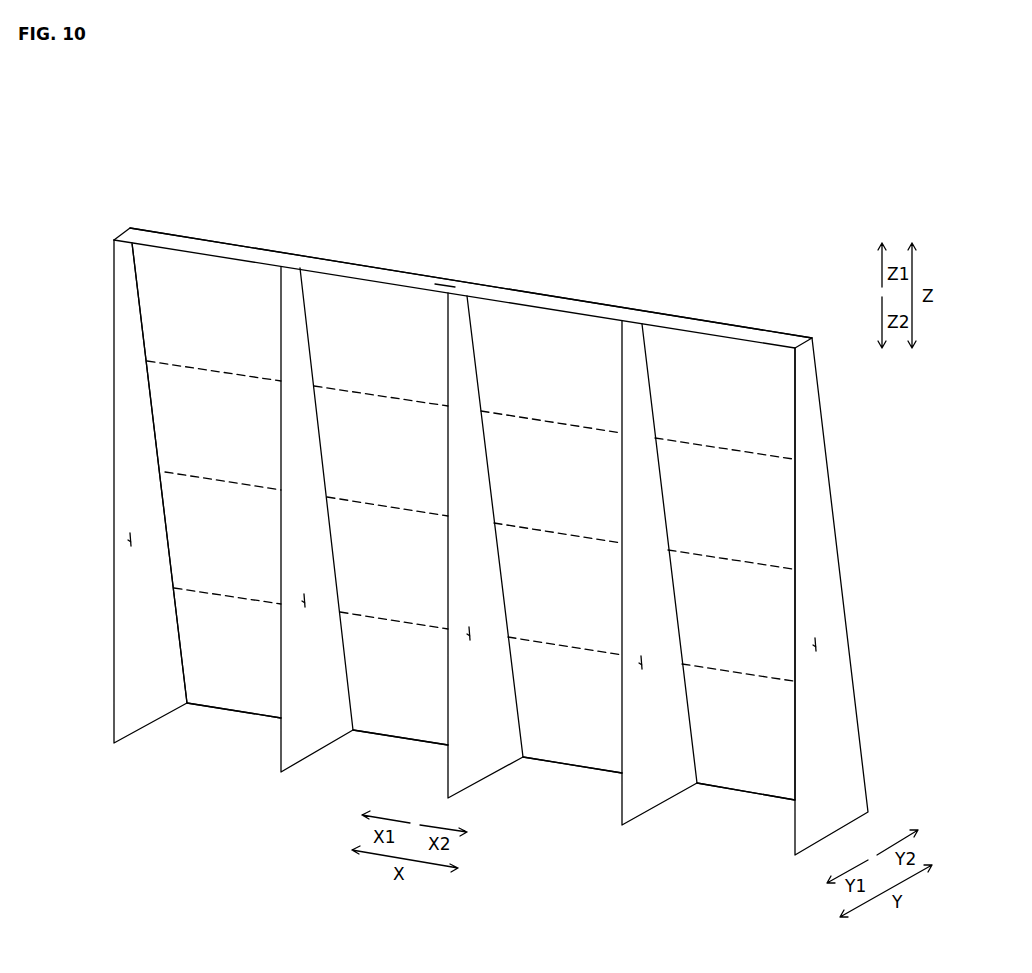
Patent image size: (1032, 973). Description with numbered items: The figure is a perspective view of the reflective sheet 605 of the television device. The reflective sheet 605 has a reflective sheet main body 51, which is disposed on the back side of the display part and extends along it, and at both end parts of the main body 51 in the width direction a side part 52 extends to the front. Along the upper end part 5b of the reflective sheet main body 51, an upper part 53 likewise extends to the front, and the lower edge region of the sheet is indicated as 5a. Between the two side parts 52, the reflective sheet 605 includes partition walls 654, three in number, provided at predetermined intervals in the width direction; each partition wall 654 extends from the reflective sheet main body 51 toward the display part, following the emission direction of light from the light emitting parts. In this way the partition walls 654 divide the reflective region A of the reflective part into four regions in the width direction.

The reflective sheet 605 is at (471, 497).
The reflective sheet main body 51 is at (368, 337).
The side part 52 is at (113, 307).
The partition wall 654 is at (289, 298).
The upper part 53 is at (685, 325).
The first surface 5a is at (228, 712).
The upper end part 5b is at (778, 331).
The reflective region A is at (200, 717).